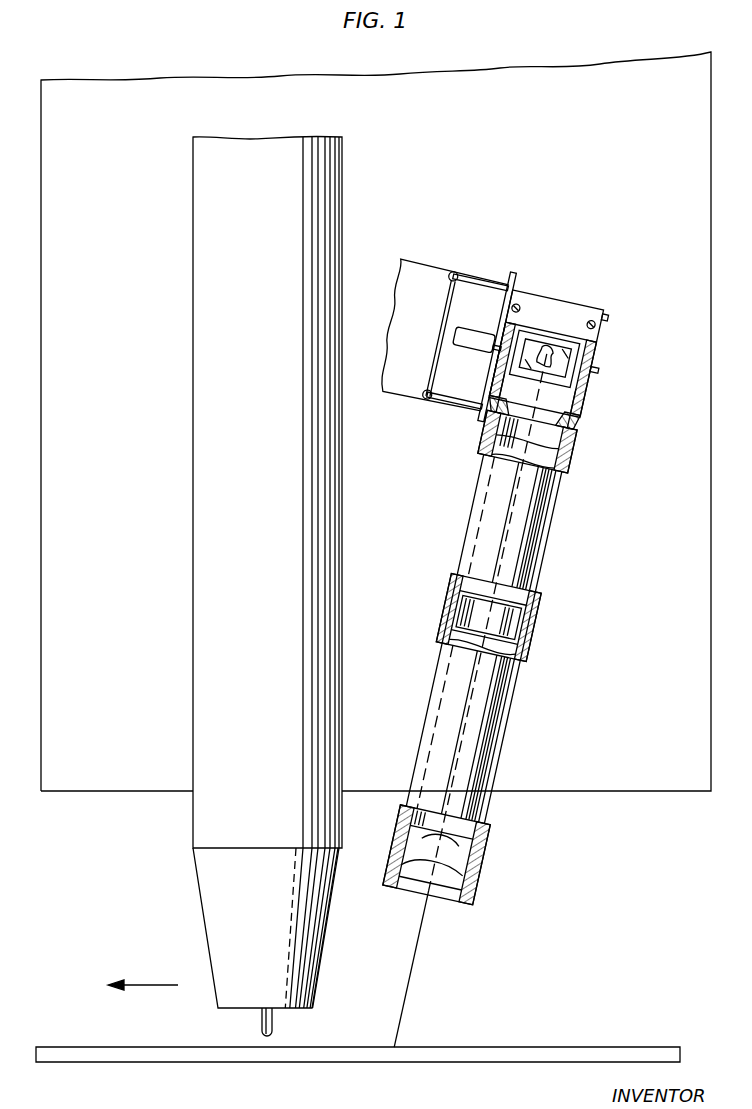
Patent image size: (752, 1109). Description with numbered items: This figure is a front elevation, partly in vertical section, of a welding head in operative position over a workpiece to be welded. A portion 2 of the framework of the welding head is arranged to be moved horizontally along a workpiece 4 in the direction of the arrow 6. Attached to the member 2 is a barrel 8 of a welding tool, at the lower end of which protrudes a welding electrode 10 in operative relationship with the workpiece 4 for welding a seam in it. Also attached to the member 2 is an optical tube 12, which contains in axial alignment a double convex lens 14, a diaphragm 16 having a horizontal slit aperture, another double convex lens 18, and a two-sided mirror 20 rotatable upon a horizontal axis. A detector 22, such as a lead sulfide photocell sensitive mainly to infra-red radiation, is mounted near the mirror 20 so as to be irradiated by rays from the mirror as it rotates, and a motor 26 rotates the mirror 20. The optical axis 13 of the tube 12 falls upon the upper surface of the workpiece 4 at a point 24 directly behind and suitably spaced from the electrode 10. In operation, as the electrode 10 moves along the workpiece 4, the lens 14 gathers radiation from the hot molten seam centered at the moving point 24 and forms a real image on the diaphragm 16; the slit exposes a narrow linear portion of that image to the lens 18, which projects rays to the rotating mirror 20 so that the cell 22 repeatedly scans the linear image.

The portion of the framework 2 is at (88, 793).
The workpiece 4 is at (128, 1062).
The arrow 6 is at (145, 983).
The barrel 8 is at (200, 372).
The welding electrode 10 is at (272, 1025).
The optical tube 12 is at (540, 587).
The optical axis 13 is at (505, 547).
The double convex lens 14 is at (470, 870).
The diaphragm 16 is at (520, 650).
The double convex lens 18 is at (558, 453).
The two-sided mirror 20 is at (560, 383).
The detector 22 is at (546, 363).
The point 24 is at (395, 1047).
The motor 26 is at (427, 275).